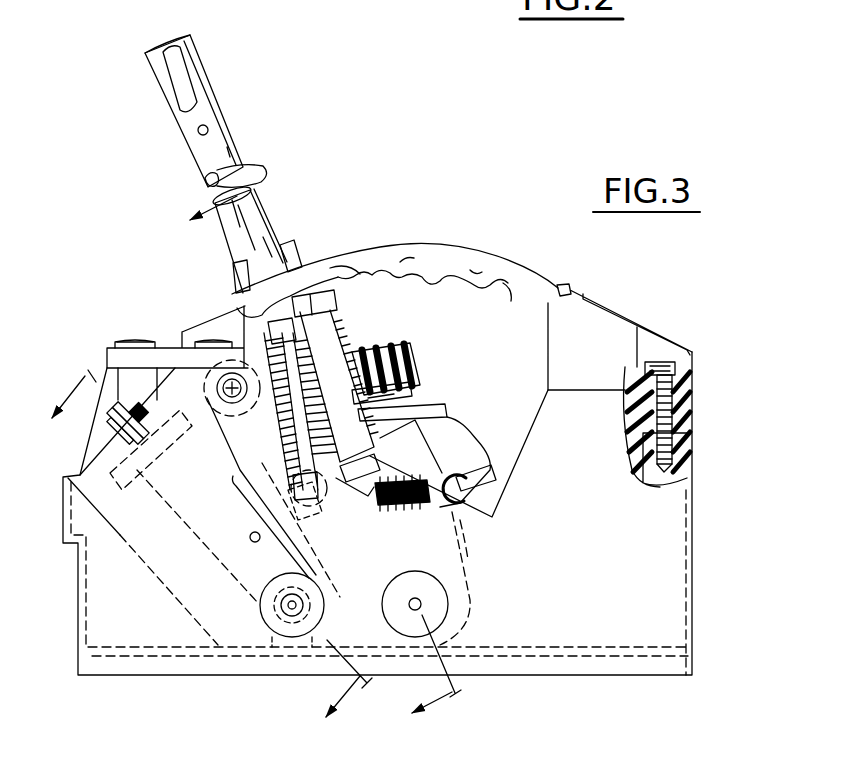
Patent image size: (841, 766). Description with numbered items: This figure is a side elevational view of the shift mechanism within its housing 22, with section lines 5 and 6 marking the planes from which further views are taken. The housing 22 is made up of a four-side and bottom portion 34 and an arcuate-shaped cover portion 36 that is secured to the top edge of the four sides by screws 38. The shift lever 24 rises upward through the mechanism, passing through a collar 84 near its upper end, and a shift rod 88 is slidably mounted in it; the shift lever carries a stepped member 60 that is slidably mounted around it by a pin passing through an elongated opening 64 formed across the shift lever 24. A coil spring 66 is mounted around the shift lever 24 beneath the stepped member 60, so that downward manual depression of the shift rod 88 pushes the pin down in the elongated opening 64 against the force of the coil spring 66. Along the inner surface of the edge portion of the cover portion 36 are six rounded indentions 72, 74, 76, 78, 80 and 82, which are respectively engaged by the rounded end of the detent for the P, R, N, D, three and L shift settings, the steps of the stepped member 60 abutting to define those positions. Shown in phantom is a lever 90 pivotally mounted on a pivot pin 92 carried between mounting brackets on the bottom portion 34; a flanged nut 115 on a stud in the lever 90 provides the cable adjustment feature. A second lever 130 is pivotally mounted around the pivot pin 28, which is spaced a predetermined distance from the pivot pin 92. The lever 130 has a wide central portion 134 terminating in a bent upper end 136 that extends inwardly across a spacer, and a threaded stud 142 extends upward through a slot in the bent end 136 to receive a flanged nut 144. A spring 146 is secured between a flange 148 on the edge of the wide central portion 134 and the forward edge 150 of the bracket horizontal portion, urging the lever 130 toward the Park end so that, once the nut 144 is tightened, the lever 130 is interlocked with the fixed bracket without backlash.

The section line 5- 5 is at (211, 551).
The section line 6- 6 is at (315, 468).
The housing 22 is at (165, 313).
The shift lever 24 is at (231, 118).
The pivot pin 28 is at (420, 603).
The four-side and bottom portion 34 is at (695, 549).
The arcuate-shaped cover portion 36 is at (437, 256).
The screws 38 is at (182, 332).
The stepped member 60 is at (336, 260).
The elongated opening 64 is at (180, 68).
The coil spring 66 is at (332, 341).
The rounded indention 72 is at (247, 301).
The rounded indention 74 is at (357, 278).
The rounded indention 76 is at (413, 262).
The rounded indention 78 is at (430, 273).
The rounded indention 80 is at (476, 270).
The rounded indention 82 is at (503, 282).
The collar 84 is at (240, 181).
The shift rod 88 is at (158, 52).
The lever 90 is at (174, 607).
The pivot pin 92 is at (288, 608).
The flanged nut 115 is at (100, 434).
The lever 130 is at (492, 439).
The wide central portion 134 is at (453, 433).
The bent upper end 136 is at (440, 408).
The threaded stud 142 is at (418, 394).
The flanged nut 144 is at (400, 368).
The spring 146 is at (466, 518).
The flange 148 is at (482, 464).
The forward edge 150 is at (330, 522).